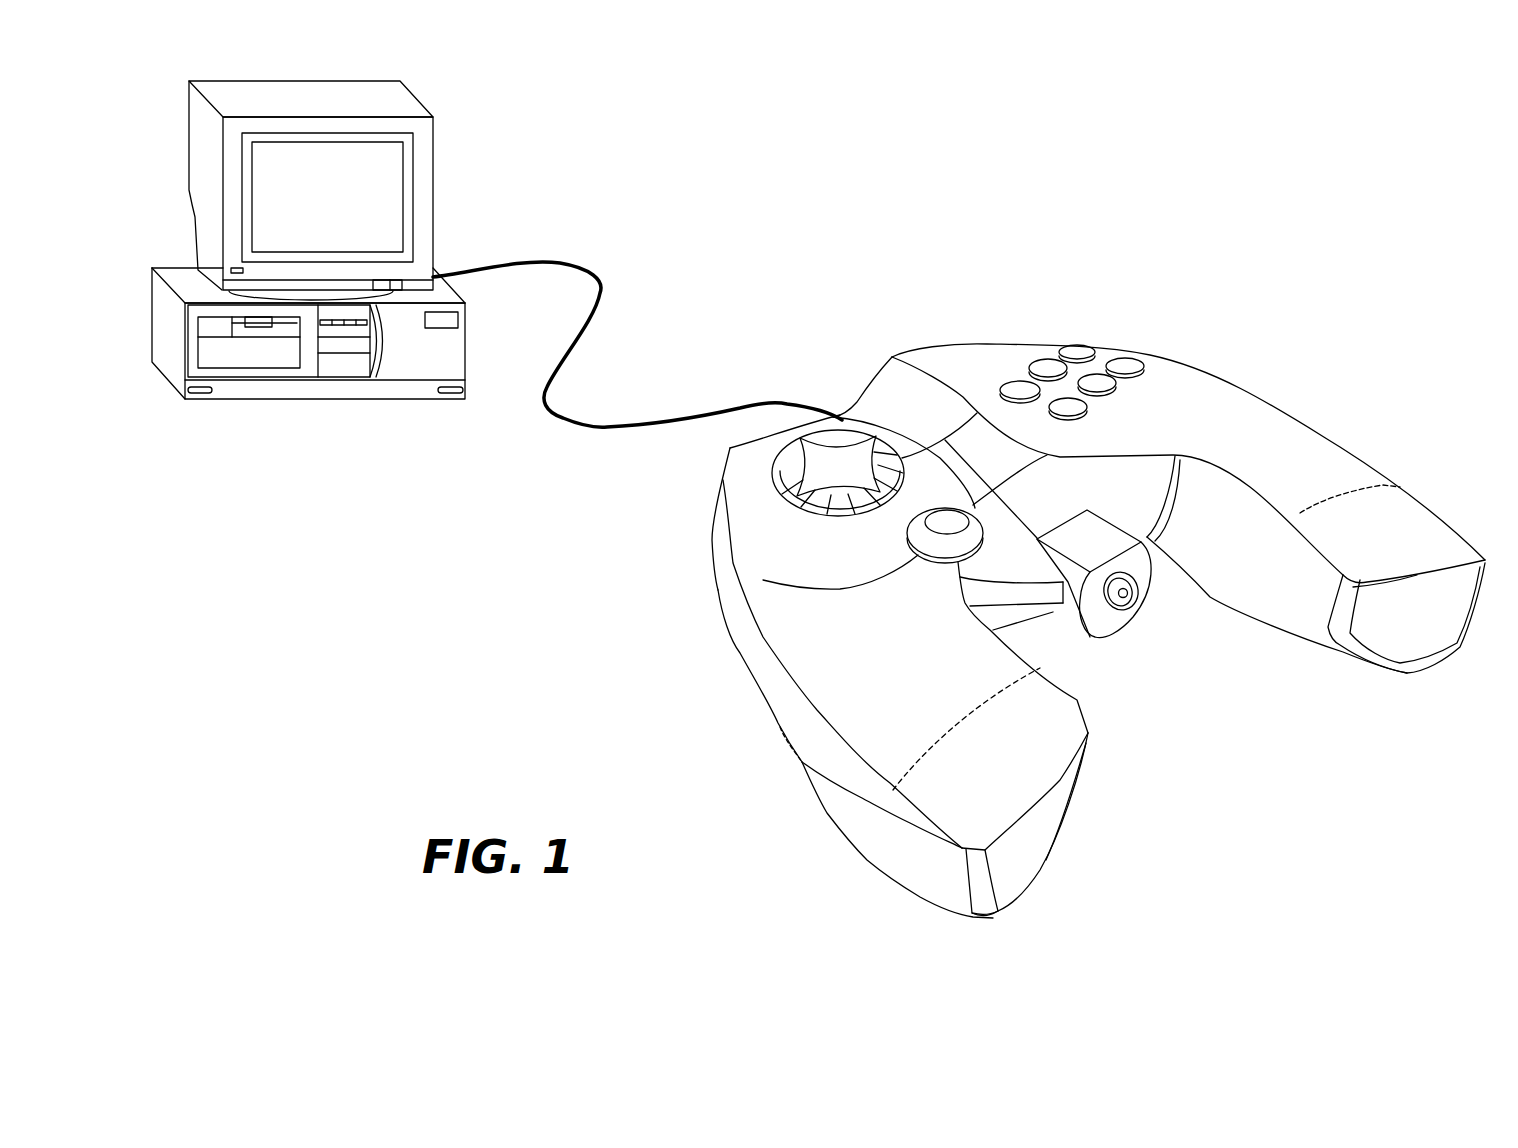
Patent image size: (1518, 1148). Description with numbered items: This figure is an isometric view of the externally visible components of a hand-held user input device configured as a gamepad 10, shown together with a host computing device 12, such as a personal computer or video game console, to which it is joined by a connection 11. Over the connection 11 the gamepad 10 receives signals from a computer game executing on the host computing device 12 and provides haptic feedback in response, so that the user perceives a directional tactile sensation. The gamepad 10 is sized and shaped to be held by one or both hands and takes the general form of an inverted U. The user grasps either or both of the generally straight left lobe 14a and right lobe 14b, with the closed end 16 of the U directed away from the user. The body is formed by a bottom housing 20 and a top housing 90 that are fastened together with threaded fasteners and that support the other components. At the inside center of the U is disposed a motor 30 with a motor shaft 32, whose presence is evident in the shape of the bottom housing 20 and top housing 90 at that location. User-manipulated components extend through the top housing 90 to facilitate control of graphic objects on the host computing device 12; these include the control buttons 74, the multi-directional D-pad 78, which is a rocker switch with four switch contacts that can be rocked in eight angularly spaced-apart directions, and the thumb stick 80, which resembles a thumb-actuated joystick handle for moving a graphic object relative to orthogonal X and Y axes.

The gamepad 10 is at (1329, 700).
The connection 11 is at (600, 291).
The host computing device 12 is at (327, 444).
The left lobe 14a is at (1053, 848).
The right lobe 14b is at (1441, 660).
The closed end 16 is at (857, 400).
The bottom housing 20 is at (823, 815).
The motor 30 is at (1102, 634).
The motor shaft 32 is at (1125, 597).
The control buttons 74 is at (1035, 358).
The multi-directional D-pad 78 is at (773, 464).
The thumb stick 80 is at (763, 580).
The top housing 90 is at (1313, 427).